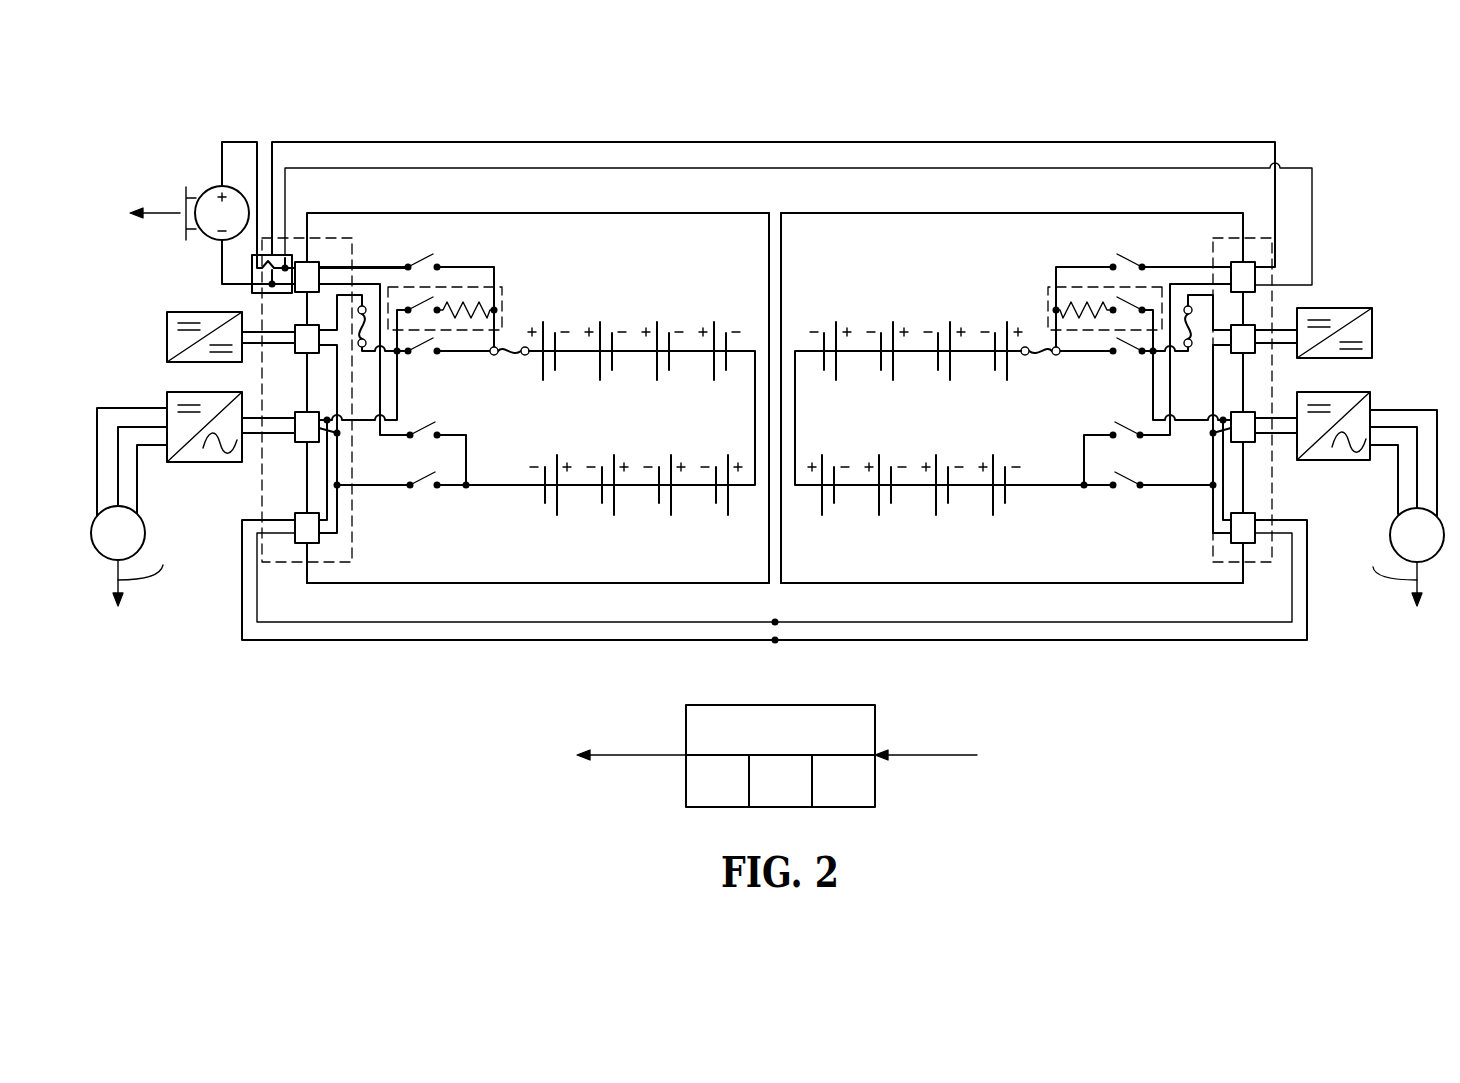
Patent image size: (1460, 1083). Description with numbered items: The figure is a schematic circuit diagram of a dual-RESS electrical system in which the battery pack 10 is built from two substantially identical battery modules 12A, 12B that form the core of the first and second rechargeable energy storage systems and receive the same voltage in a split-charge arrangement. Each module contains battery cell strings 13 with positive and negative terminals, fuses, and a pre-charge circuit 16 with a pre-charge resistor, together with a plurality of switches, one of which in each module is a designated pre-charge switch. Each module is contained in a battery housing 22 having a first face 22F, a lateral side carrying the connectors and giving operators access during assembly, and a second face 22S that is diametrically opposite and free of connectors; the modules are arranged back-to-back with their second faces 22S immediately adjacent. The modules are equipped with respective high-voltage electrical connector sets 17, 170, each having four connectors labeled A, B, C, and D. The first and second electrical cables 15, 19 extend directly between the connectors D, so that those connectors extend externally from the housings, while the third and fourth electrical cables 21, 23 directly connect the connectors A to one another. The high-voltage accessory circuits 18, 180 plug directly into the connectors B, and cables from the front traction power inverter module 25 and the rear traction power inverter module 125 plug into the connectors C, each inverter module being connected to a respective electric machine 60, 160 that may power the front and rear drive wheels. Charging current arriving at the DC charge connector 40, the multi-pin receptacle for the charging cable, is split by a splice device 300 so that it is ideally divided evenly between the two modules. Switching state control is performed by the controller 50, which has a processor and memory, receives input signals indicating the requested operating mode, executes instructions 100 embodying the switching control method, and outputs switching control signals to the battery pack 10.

The battery pack 10 is at (1270, 102).
The first battery module 12A is at (655, 272).
The second battery module 12B is at (890, 272).
The battery cell strings 13 is at (543, 366).
The first electrical cable 15 is at (1125, 640).
The pre-charge circuit 16 is at (503, 310).
The high-voltage electrical connector set 17 is at (295, 238).
The high-voltage accessory circuit 18 is at (167, 335).
The second electrical cable 19 is at (1058, 622).
The third electrical cable 21 is at (1062, 140).
The battery housing 22 is at (660, 213).
The second face 22S is at (779, 236).
The first face 22F is at (307, 575).
The fourth electrical cable 23 is at (995, 170).
The front traction power inverter module 25 is at (167, 400).
The DC charge connector 40 is at (205, 188).
The controller 50 is at (777, 756).
The electric machine 60 is at (148, 532).
The instructions 100 is at (724, 781).
The rear traction power inverter module 125 is at (1370, 398).
The electric machine 160 is at (1390, 535).
The high-voltage electrical connector set 170 is at (1233, 238).
The high-voltage accessory circuit 180 is at (1372, 330).
The splice device 300 is at (252, 287).